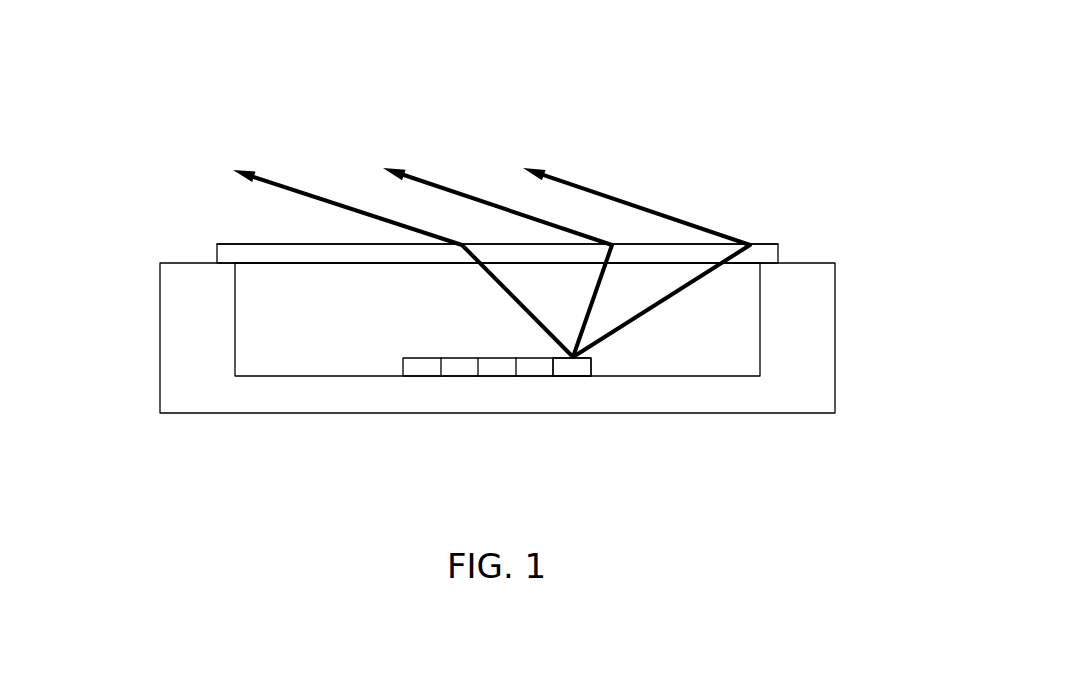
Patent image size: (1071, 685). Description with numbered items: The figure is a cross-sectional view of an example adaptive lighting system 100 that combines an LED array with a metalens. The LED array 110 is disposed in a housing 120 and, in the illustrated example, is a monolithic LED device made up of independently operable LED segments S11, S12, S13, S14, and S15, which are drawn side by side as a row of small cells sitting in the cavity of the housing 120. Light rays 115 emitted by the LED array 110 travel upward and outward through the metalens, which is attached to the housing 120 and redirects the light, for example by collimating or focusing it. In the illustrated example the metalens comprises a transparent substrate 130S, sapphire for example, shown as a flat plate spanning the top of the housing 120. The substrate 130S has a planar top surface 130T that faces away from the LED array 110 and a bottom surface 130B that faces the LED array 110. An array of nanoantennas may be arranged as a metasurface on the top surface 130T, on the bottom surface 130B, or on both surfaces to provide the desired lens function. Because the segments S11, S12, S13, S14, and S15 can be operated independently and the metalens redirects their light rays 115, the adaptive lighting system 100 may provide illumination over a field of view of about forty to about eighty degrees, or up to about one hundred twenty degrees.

The adaptive lighting system 100 is at (652, 116).
The LED array 110 is at (508, 388).
The light rays 115 is at (306, 190).
The housing 120 is at (797, 365).
The transparent substrate 130S is at (230, 256).
The top surface 130T is at (260, 230).
The bottom surface 130B is at (282, 279).
The LED segment S11 is at (570, 368).
The LED segment S12 is at (529, 370).
The LED segment S13 is at (490, 368).
The LED segment S14 is at (459, 369).
The LED segment S15 is at (421, 369).